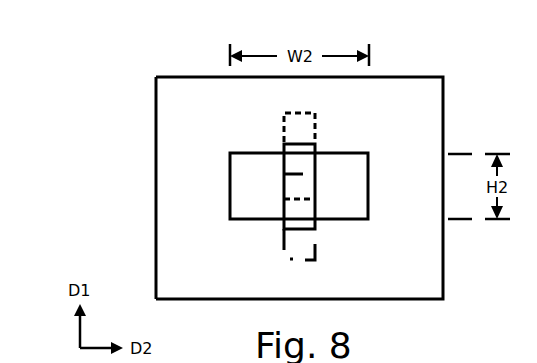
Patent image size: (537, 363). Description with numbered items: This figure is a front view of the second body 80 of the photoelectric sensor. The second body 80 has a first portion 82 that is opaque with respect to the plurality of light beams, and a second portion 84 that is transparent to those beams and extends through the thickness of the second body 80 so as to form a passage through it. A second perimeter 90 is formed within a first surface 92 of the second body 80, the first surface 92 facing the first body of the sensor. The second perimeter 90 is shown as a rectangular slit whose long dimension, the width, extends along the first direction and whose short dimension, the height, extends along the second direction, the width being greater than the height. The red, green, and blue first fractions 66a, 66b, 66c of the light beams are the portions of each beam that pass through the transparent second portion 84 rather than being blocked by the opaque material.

The second body 80 is at (146, 92).
The first portion 82 is at (156, 143).
The first surface 92 is at (162, 185).
The second perimeter 90 is at (230, 172).
The second portion 84 is at (230, 203).
The red first fraction 66a is at (305, 259).
The green first fraction 66b is at (315, 187).
The blue first fraction 66c is at (315, 132).